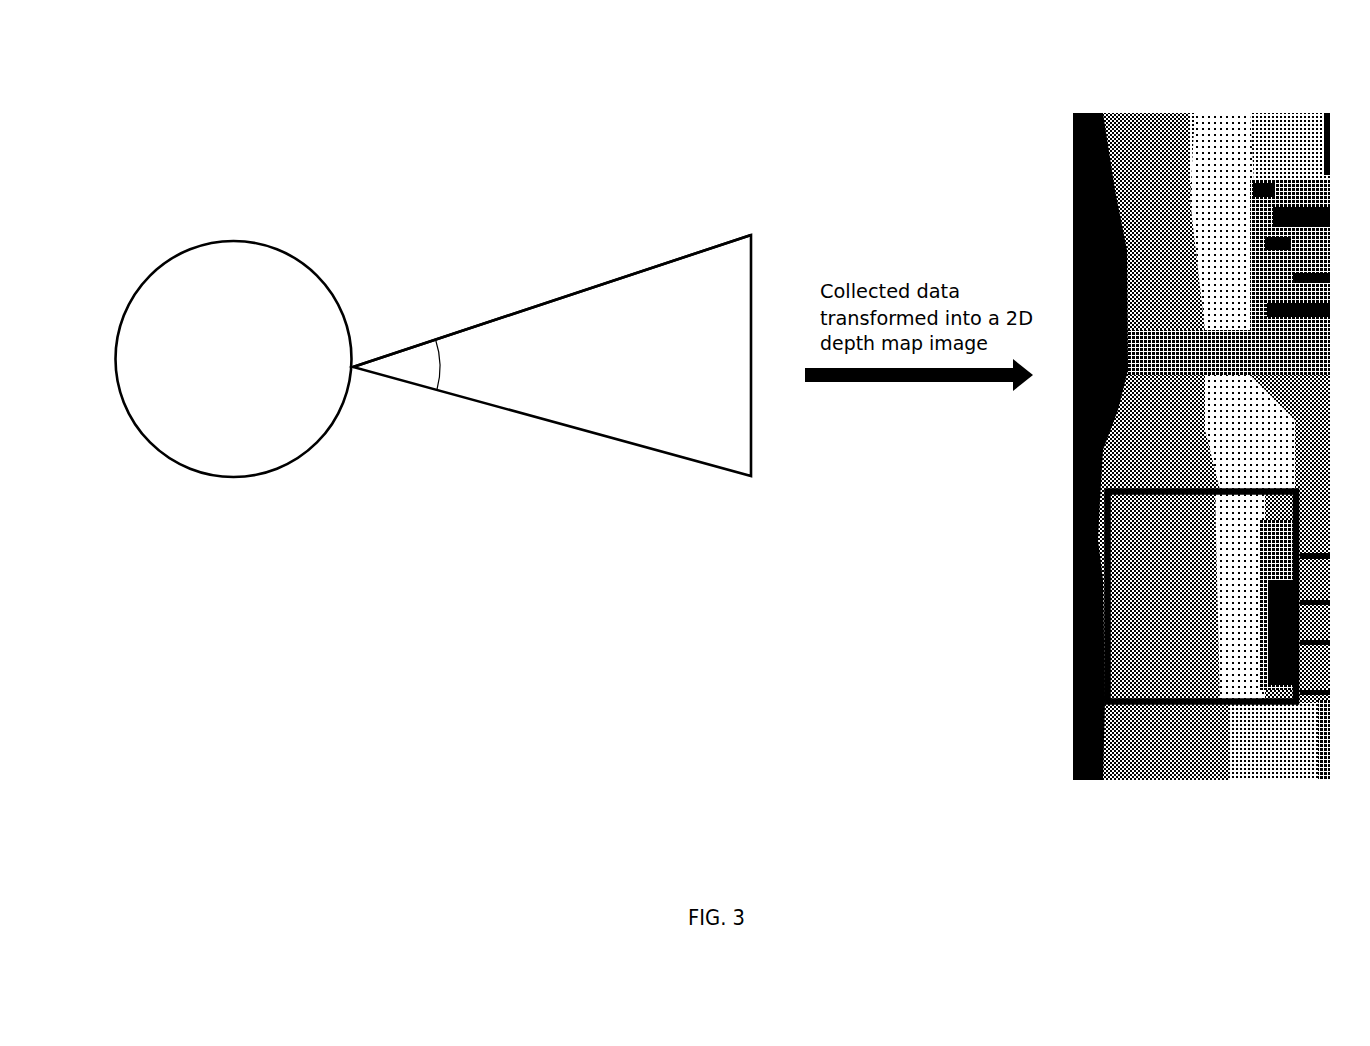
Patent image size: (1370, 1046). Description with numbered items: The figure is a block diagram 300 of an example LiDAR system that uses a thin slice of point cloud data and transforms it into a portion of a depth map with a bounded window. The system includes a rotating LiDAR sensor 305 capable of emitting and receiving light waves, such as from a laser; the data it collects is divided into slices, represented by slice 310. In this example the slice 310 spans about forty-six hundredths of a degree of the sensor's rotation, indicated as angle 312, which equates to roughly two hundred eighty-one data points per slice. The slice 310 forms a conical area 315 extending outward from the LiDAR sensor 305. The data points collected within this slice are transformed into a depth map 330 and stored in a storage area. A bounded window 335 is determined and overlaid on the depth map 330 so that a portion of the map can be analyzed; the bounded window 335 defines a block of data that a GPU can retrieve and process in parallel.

The block diagram 300 is at (211, 83).
The LiDAR sensor 305 is at (260, 369).
The slice 310 is at (448, 331).
The slice angle 312 is at (448, 362).
The conical area 315 is at (691, 369).
The depth map 330 is at (1161, 114).
The bounded window 335 is at (1159, 668).